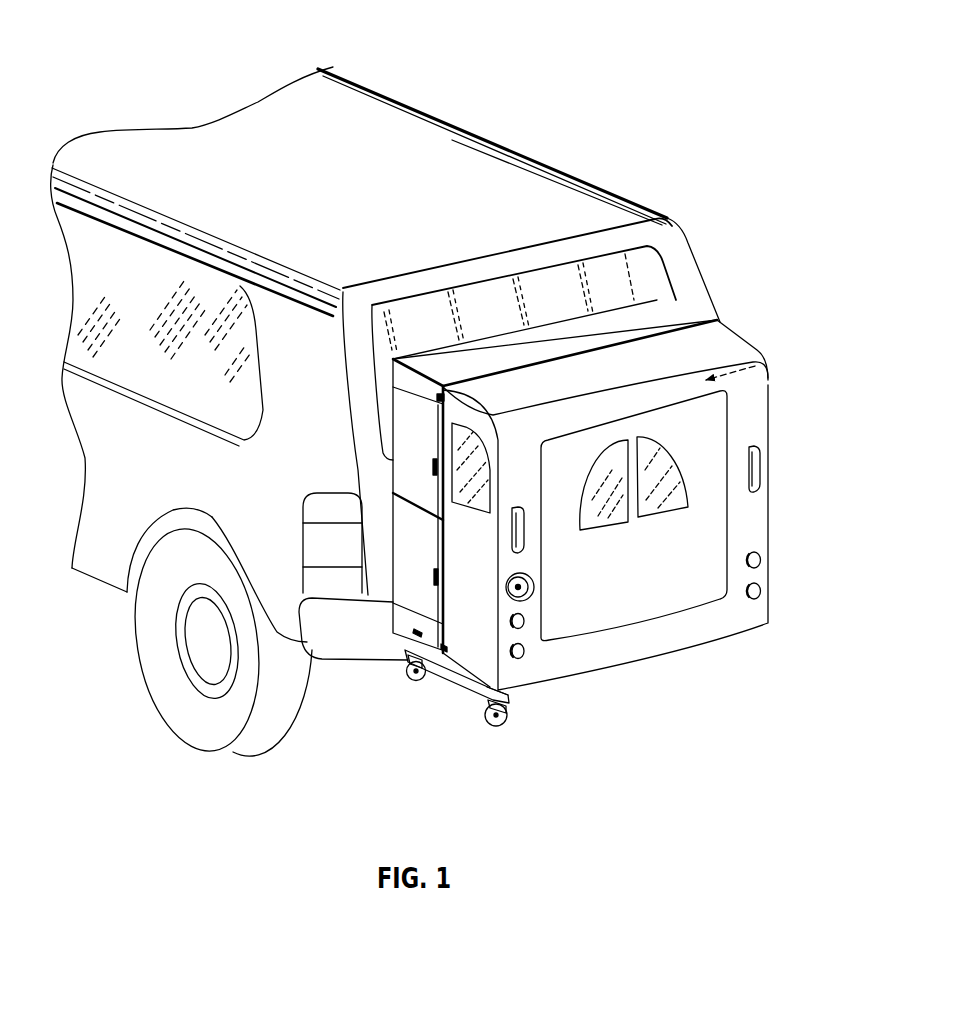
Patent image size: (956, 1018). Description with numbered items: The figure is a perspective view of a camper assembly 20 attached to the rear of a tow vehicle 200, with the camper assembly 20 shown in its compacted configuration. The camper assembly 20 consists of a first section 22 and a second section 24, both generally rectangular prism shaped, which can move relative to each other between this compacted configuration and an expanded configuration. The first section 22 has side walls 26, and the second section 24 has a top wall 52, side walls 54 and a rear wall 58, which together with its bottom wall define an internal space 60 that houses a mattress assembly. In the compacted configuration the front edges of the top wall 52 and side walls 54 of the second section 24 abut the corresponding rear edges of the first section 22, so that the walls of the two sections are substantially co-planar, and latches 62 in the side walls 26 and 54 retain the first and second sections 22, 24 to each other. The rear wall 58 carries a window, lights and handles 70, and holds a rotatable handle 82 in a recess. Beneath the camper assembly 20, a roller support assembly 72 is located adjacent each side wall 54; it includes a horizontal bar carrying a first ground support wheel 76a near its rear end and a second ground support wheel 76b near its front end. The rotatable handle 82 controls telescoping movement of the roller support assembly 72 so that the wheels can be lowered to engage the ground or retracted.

The tow vehicle 200 is at (434, 96).
The camper assembly 20 is at (747, 307).
The first section 22 is at (649, 318).
The second section 24 is at (758, 338).
The side walls 26 is at (433, 674).
The top wall 52 is at (690, 357).
The side walls 54 is at (770, 495).
The rear wall 58 is at (748, 530).
The internal space 60 is at (769, 368).
The latches 62 is at (439, 394).
The handles 70 is at (761, 467).
The roller support assembly 72 is at (452, 736).
The first ground support wheel 76a is at (497, 724).
The second ground support wheel 76b is at (410, 684).
The rotatable handle 82 is at (532, 594).